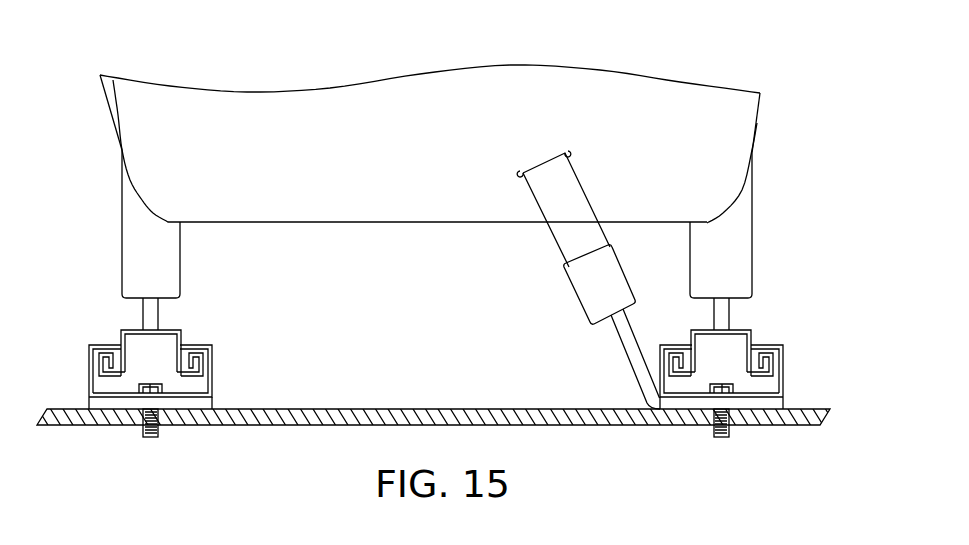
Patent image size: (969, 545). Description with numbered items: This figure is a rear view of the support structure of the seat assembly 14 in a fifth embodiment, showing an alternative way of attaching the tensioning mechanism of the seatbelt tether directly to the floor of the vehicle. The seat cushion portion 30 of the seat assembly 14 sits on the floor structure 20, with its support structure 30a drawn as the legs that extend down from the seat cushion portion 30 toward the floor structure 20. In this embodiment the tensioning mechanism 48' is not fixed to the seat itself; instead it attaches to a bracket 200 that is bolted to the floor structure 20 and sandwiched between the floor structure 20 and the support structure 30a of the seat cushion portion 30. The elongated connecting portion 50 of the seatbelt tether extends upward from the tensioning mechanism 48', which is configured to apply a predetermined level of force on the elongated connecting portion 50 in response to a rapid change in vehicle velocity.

The seat assembly 14 is at (650, 72).
The seat cushion portion 30 is at (757, 123).
The support structure 30a is at (752, 270).
The elongated connecting portion 50 is at (577, 184).
The tensioning mechanism 48' is at (572, 285).
The bracket 200 is at (623, 360).
The floor structure 20 is at (425, 409).